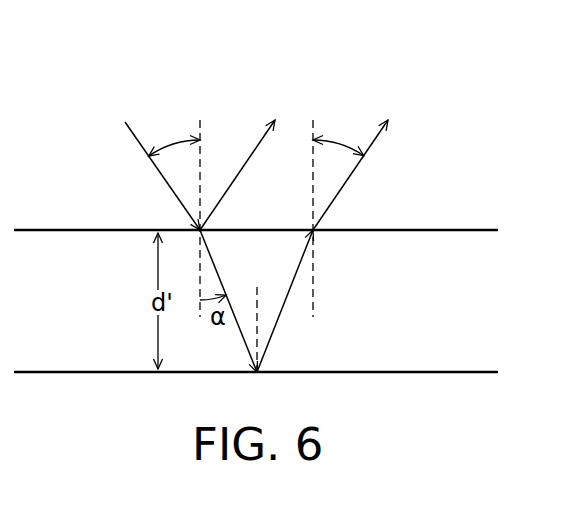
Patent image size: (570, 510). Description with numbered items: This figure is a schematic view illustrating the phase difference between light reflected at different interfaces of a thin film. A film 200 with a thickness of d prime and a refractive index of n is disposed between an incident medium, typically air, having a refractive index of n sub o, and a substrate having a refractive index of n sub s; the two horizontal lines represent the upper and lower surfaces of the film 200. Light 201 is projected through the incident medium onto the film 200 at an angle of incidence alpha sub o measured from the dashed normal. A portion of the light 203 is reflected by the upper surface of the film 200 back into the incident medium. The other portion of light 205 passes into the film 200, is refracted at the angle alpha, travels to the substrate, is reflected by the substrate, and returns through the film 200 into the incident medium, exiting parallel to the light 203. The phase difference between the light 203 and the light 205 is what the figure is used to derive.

The film 200 is at (442, 300).
The light 201 is at (142, 177).
The portion of the light 203 is at (235, 160).
The other portion of light 205 is at (372, 178).